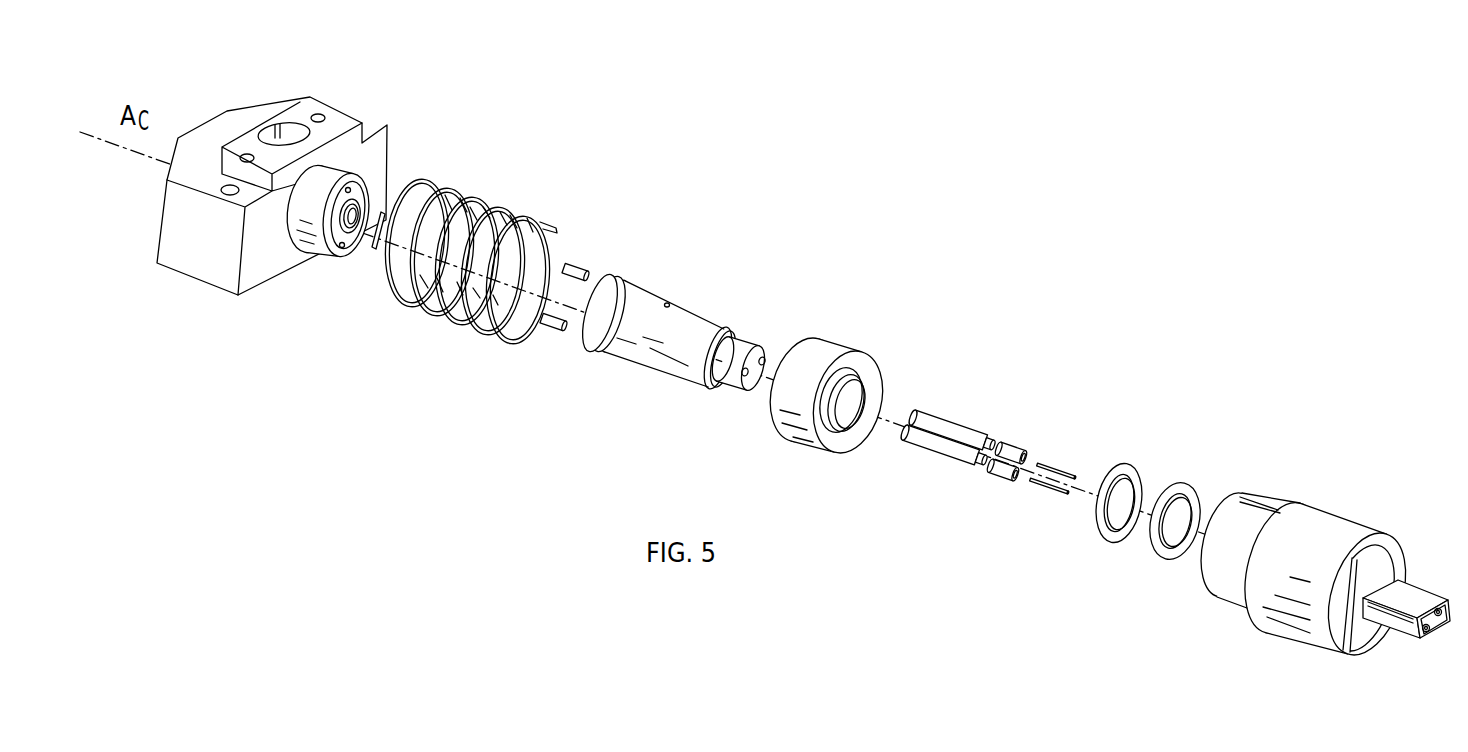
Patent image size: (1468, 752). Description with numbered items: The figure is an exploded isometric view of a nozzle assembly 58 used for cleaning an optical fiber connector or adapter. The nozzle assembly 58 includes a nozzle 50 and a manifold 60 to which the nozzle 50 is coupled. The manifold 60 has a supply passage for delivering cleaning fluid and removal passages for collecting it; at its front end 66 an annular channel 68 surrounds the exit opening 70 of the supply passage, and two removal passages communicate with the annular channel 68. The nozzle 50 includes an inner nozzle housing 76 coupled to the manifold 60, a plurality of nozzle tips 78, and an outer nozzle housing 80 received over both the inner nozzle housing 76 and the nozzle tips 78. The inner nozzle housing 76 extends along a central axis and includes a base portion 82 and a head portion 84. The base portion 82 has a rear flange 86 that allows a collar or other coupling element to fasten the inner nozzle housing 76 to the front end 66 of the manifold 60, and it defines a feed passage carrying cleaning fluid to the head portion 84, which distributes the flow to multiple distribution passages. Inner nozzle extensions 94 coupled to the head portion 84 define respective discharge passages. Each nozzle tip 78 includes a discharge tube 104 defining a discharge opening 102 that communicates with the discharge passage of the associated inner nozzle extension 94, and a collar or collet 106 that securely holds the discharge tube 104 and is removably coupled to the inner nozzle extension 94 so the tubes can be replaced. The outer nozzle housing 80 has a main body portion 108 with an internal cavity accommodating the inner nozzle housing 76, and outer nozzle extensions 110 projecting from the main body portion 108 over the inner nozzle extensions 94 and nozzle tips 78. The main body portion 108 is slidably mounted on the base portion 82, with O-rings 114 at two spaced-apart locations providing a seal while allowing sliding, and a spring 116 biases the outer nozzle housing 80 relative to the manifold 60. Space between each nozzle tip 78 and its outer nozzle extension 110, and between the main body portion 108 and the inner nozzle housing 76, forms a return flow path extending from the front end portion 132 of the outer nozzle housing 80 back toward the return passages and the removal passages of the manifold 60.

The nozzle 50 is at (1434, 470).
The nozzle assembly 58 is at (717, 130).
The manifold 60 is at (365, 120).
The front end 66 is at (365, 176).
The annular channel 68 is at (333, 256).
The exit opening 70 is at (353, 222).
The inner nozzle housing 76 is at (708, 286).
The nozzle tips 78 is at (1025, 498).
The outer nozzle housing 80 is at (1322, 500).
The base portion 82 is at (647, 367).
The head portion 84 is at (729, 392).
The rear flange 86 is at (613, 279).
The inner nozzle extensions 94 is at (940, 417).
The discharge opening 102 is at (1072, 497).
The discharge tube 104 is at (1040, 487).
The collar or collet 106 is at (1000, 480).
The main body portion 108 is at (1285, 640).
The outer nozzle extensions 110 is at (1423, 588).
The O-rings 114 is at (1193, 488).
The spring 116 is at (494, 206).
The front end portion 132 is at (1421, 640).